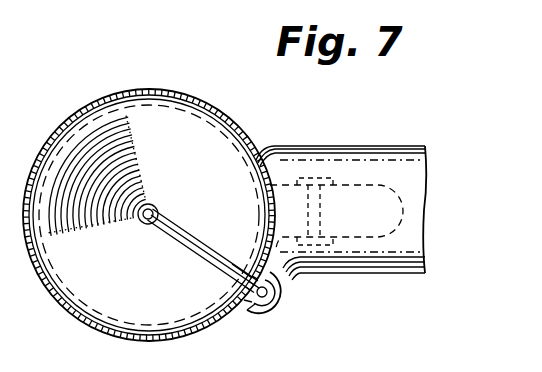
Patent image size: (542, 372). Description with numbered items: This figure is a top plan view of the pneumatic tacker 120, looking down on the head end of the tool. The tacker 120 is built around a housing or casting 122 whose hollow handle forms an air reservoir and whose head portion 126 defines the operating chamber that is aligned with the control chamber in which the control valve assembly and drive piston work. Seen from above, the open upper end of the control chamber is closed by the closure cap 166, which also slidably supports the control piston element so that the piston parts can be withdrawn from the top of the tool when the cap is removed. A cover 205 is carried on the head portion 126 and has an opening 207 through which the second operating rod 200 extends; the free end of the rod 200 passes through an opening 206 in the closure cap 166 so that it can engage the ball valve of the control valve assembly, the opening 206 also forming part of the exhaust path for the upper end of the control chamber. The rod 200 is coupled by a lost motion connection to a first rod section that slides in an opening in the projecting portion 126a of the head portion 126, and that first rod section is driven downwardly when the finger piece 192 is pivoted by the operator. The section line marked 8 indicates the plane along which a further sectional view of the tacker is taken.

The pneumatic tacker 120 is at (236, 66).
The housing 122 is at (393, 131).
The head portion 126 is at (143, 98).
The projecting portion 126a is at (250, 306).
The closure cap 166 is at (77, 262).
The finger piece 192 is at (377, 238).
The second operating rod 200 is at (204, 262).
The cover 205 is at (247, 133).
The opening in closure cap 206 is at (142, 222).
The opening in cover 207 is at (246, 258).
The section line 8- 8 is at (42, 141).